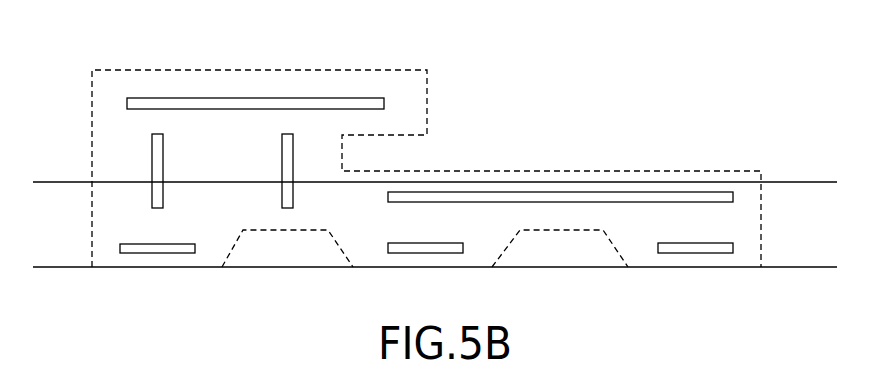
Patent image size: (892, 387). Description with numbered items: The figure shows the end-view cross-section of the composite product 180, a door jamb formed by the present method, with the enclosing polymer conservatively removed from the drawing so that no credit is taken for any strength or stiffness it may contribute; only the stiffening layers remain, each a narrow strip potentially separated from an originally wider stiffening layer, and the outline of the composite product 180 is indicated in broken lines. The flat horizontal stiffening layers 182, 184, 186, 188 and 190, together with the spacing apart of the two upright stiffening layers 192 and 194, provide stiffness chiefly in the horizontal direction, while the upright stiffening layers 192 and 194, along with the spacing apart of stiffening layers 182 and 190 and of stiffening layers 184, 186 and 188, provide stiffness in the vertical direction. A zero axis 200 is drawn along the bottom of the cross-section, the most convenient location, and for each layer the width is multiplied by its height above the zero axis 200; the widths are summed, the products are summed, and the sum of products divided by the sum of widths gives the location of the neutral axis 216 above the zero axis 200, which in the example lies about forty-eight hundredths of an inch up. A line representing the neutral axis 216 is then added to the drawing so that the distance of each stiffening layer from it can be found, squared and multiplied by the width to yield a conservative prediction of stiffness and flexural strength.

The composite product 180 is at (430, 130).
The stiffening layer 182 is at (287, 98).
The stiffening layer 184 is at (615, 187).
The stiffening layer 186 is at (680, 253).
The stiffening layer 188 is at (413, 253).
The stiffening layer 190 is at (157, 253).
The stiffening layer 192 is at (293, 205).
The stiffening layer 194 is at (152, 173).
The zero axis 200 is at (62, 267).
The neutral axis 216 is at (63, 183).